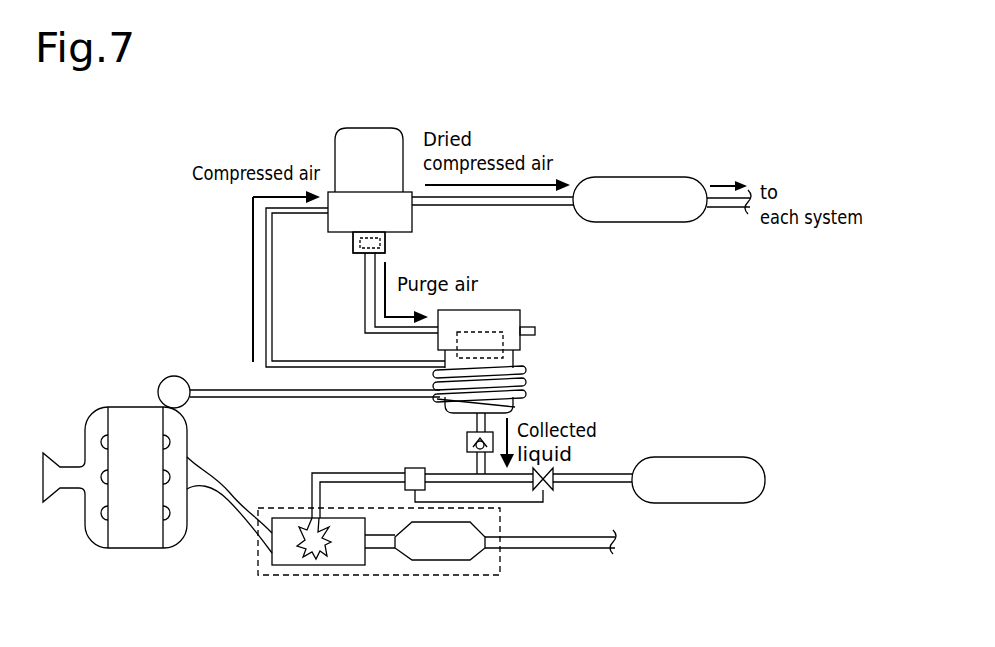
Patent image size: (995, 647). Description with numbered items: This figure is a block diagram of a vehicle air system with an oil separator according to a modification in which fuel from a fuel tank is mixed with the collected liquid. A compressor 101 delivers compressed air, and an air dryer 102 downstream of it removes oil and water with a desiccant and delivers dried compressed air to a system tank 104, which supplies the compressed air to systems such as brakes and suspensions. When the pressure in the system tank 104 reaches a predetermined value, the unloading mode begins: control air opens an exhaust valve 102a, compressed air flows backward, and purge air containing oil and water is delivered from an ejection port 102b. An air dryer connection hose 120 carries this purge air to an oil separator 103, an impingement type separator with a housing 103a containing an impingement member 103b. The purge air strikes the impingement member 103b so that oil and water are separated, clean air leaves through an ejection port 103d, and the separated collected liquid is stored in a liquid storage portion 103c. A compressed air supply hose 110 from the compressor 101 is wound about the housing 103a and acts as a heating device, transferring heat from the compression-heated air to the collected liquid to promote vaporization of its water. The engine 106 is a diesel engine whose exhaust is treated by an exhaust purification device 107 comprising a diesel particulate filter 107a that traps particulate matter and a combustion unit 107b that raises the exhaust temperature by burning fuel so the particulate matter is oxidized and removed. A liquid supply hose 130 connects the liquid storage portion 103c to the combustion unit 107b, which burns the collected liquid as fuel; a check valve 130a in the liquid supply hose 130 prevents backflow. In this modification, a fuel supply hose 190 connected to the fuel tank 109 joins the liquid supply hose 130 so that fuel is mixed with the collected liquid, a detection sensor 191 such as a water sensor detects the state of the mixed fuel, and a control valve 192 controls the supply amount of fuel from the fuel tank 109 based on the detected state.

The compressor 101 is at (173, 376).
The air dryer 102 is at (365, 128).
The exhaust valve 102a is at (354, 242).
The ejection port 102b is at (355, 254).
The oil separator 103 is at (505, 310).
The housing 103a is at (515, 357).
The impingement member 103b is at (453, 338).
The liquid storage portion 103c is at (517, 405).
The ejection port 103d is at (535, 328).
The system tank 104 is at (658, 177).
The engine 106 is at (125, 407).
The exhaust purification device 107 is at (495, 578).
The diesel particulate filter 107a is at (430, 562).
The combustion unit 107b is at (322, 567).
The fuel tank 109 is at (700, 457).
The compressed air supply hose 110 is at (274, 320).
The air dryer connection hose 120 is at (366, 316).
The liquid supply hose 130 is at (324, 470).
The check valve 130a is at (466, 438).
The fuel supply hose 190 is at (617, 473).
The detection sensor 191 is at (406, 470).
The control valve 192 is at (547, 492).